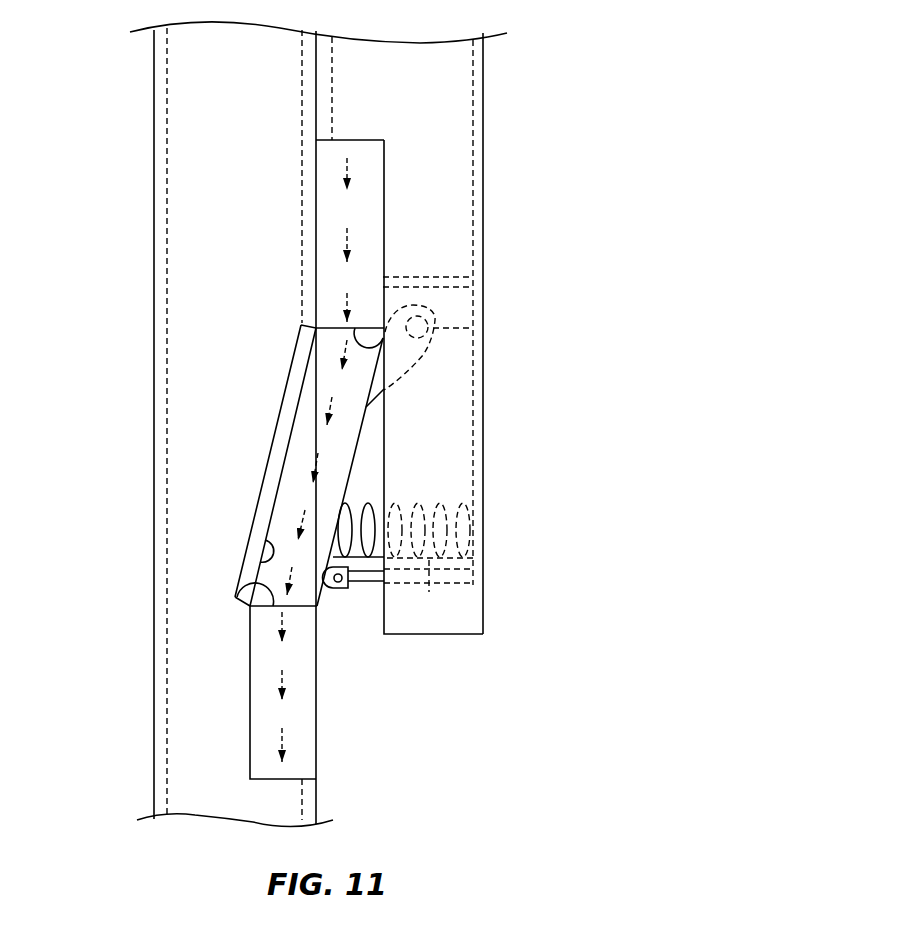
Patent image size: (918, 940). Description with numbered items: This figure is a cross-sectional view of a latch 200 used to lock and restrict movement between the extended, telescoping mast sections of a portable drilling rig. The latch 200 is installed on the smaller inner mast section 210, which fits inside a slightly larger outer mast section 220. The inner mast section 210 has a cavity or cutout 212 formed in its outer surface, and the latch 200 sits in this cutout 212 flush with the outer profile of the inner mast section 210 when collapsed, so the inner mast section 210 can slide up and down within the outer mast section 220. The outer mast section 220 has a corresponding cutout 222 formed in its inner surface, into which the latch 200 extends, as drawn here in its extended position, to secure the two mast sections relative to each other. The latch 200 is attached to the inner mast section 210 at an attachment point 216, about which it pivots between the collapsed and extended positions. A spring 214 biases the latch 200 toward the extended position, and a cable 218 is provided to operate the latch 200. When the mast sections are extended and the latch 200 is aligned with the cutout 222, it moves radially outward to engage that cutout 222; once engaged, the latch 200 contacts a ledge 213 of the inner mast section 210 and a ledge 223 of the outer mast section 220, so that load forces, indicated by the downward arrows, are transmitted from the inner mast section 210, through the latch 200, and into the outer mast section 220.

The latch 200 is at (333, 485).
The inner mast section 210 is at (483, 107).
The cutout 212 is at (378, 422).
The ledge 213 is at (383, 338).
The spring 214 is at (448, 533).
The attachment point 216 is at (433, 327).
The cable 218 is at (370, 583).
The outer mast section 220 is at (154, 492).
The cutout 222 is at (262, 562).
The ledge 223 is at (235, 597).